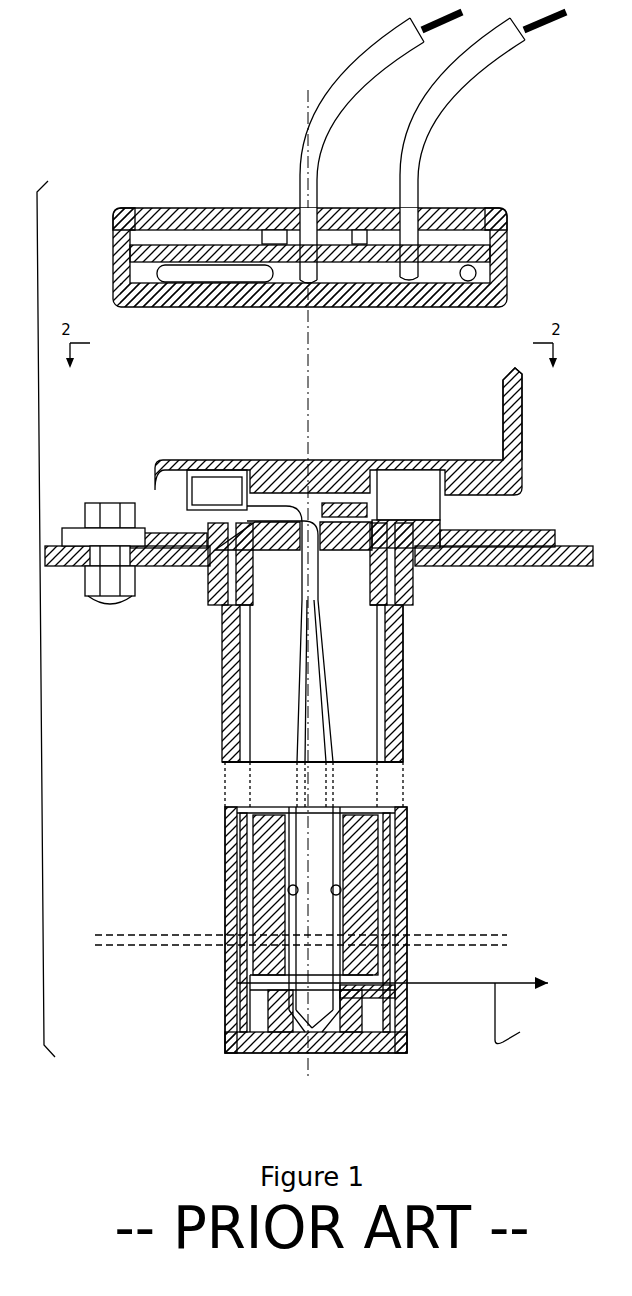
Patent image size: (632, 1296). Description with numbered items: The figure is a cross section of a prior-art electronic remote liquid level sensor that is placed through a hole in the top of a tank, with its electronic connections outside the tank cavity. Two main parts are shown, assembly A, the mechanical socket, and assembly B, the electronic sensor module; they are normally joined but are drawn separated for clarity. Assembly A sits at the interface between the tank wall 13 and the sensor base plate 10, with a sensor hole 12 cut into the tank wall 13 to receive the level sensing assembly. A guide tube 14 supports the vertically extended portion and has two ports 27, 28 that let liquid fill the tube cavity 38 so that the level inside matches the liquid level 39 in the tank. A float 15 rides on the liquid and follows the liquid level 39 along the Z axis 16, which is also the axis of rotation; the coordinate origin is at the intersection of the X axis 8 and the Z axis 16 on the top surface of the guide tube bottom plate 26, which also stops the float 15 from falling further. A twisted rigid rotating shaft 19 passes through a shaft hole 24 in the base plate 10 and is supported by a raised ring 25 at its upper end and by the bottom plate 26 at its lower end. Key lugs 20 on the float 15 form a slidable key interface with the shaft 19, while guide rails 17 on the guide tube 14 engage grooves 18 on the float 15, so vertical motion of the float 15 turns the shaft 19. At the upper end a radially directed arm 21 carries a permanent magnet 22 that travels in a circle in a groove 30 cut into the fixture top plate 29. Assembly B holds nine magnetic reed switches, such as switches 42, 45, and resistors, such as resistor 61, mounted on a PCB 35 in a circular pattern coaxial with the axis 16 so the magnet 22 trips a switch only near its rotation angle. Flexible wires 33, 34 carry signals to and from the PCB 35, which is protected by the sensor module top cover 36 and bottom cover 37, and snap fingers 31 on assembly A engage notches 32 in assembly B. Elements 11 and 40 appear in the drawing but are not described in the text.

The assembly A is at (165, 460).
The assembly B is at (175, 210).
The X axis 8 is at (523, 1013).
The sensor base plate 10 is at (405, 830).
The bolt 11 is at (95, 505).
The sensor hole 12 is at (325, 803).
The tank wall 13 is at (520, 567).
The guide tube 14 is at (403, 705).
The float 15 is at (400, 907).
The Z axis 16 is at (325, 665).
The guide rails 17 is at (403, 735).
The grooves 18 is at (225, 881).
The rigid rotating shaft 19 is at (312, 437).
The key lugs 20 is at (222, 650).
The radially directed arm 21 is at (275, 460).
The permanent magnet 22 is at (218, 477).
The shaft hole 24 is at (320, 555).
The raised ring 25 is at (345, 520).
The guide tube bottom plate 26 is at (370, 1040).
The port 27 is at (232, 1012).
The port 28 is at (403, 652).
The fixture top plate 29 is at (348, 470).
The groove 30 is at (404, 968).
The snap fingers 31 is at (523, 432).
The notches 32 is at (118, 212).
The electrical interconnect flexible wire 33 is at (335, 95).
The electrical interconnect flexible wire 34 is at (437, 98).
The PCB 35 is at (232, 208).
The sensor module top cover 36 is at (360, 262).
The sensor module bottom cover 37 is at (235, 305).
The tube cavity 38 is at (265, 1052).
The liquid level 39 is at (225, 950).
The support plate 40 is at (530, 533).
The magnetic reed switch 42 is at (205, 562).
The magnetic reed switch 45 is at (165, 284).
The resistor 61 is at (463, 283).